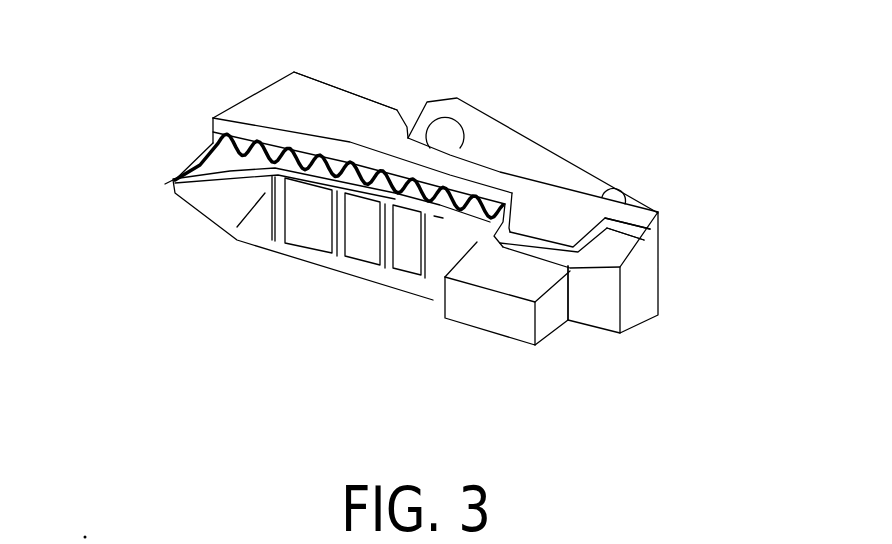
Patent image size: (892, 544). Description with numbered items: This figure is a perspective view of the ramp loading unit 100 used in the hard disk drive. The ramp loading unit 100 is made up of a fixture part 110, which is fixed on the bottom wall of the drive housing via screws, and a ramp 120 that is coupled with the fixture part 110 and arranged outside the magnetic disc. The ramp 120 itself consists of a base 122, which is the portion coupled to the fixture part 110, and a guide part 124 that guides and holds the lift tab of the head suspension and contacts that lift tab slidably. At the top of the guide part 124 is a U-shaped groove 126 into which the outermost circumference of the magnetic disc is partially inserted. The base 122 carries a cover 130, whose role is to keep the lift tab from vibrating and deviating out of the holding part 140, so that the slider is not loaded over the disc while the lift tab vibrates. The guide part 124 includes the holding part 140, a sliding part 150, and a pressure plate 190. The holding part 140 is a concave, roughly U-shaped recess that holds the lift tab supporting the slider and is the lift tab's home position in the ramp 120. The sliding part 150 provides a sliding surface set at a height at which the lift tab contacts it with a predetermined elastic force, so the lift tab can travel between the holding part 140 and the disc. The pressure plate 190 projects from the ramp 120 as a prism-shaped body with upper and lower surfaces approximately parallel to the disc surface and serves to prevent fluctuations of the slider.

The ramp loading unit 100 is at (503, 29).
The fixture part 110 is at (503, 143).
The ramp 120 is at (316, 142).
The base 122 is at (328, 106).
The guide part 124 is at (618, 247).
The U-shaped groove 126 is at (157, 176).
The cover 130 is at (553, 217).
The holding part 140 is at (547, 250).
The sliding part 150 is at (434, 307).
The pressure plate 190 is at (498, 312).